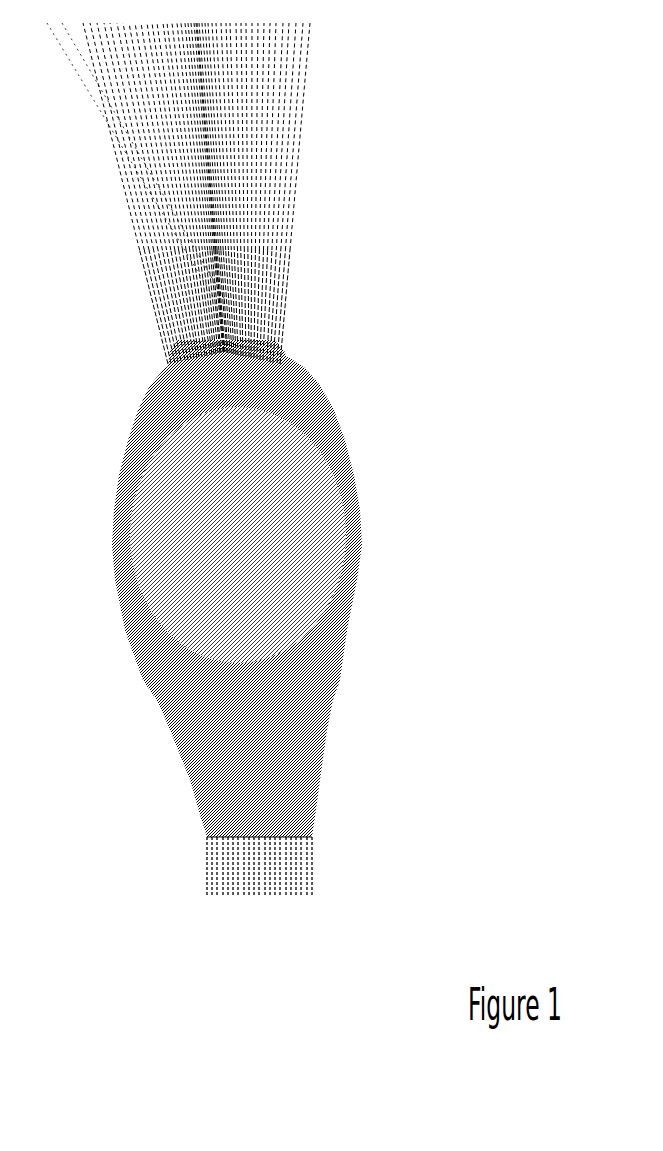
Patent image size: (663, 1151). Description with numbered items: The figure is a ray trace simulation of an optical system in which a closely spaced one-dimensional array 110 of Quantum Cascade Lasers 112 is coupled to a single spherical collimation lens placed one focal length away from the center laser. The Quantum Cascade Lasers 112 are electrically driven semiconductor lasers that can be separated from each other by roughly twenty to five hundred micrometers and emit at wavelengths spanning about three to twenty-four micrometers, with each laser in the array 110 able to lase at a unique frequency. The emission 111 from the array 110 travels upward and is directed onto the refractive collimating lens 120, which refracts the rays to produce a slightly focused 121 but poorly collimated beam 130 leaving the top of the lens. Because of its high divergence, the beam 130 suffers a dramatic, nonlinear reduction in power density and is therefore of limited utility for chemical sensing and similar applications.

The array 110 is at (231, 885).
The emission 111 is at (261, 733).
The Quantum Cascade Lasers 112 is at (308, 863).
The refractive collimating lens 120 is at (212, 537).
The slightly focused beam 121 is at (240, 308).
The poorly collimated beam 130 is at (178, 161).